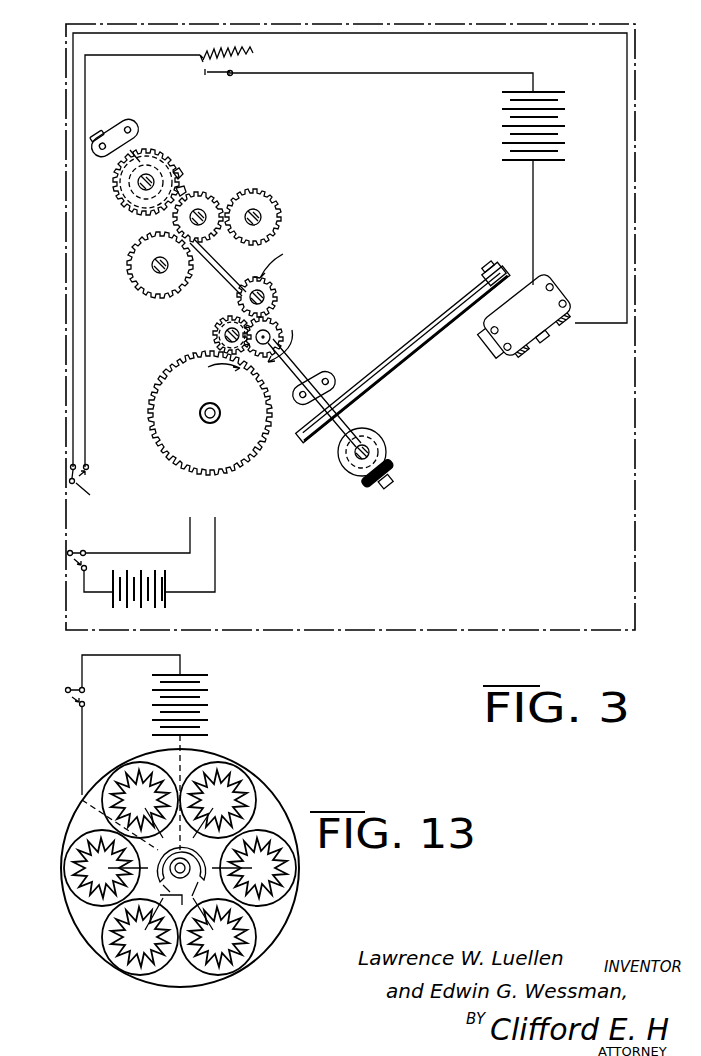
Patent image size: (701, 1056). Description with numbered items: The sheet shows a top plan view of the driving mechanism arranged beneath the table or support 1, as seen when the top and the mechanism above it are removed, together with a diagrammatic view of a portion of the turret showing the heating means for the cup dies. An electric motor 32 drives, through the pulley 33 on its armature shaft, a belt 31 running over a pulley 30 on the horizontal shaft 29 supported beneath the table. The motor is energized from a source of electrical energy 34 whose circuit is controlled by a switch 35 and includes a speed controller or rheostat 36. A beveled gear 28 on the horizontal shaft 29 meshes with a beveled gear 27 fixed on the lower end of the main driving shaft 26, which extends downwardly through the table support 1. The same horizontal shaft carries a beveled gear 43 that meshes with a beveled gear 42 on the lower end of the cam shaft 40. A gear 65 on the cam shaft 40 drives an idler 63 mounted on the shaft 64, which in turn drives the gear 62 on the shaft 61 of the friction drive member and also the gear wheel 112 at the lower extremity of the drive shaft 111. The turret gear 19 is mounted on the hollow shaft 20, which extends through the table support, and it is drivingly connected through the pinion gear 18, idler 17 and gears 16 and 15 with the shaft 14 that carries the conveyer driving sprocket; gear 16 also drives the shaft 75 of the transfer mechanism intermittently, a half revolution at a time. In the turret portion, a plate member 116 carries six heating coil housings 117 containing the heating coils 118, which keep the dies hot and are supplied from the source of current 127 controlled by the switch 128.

In FIG. 3, the table or support 1 is at (641, 372).
In FIG. 3, the shaft 14 is at (265, 298).
In FIG. 3, the gear 15 is at (277, 255).
In FIG. 3, the gear 16 is at (226, 338).
In FIG. 3, the idler 17 is at (280, 330).
In FIG. 3, the pinion gear 18 is at (213, 327).
In FIG. 3, the turret gear 19 is at (262, 440).
In FIG. 3, the shaft 20 is at (209, 421).
In FIG. 3, the main driving shaft 26 is at (371, 452).
In FIG. 3, the beveled gear 27 is at (382, 438).
In FIG. 3, the beveled gear 28 is at (395, 470).
In FIG. 3, the horizontal shaft 29 is at (386, 486).
In FIG. 3, the pulley 30 is at (345, 404).
In FIG. 3, the belt 31 is at (415, 345).
In FIG. 3, the electric motor 32 is at (535, 360).
In FIG. 3, the pulley 33 is at (497, 268).
In FIG. 3, the source of electrical energy 34 is at (505, 128).
In FIG. 3, the switch 35 is at (93, 491).
In FIG. 3, the speed controller or rheostat 36 is at (262, 57).
In FIG. 3, the cam shaft 40 is at (148, 180).
In FIG. 3, the beveled gear 42 is at (176, 171).
In FIG. 3, the beveled gear 43 is at (182, 190).
In FIG. 3, the shaft 61 is at (258, 217).
In FIG. 3, the gear 62 is at (270, 200).
In FIG. 3, the idler 63 is at (220, 198).
In FIG. 3, the shaft 64 is at (196, 218).
In FIG. 3, the gear 65 is at (120, 190).
In FIG. 3, the shaft 75 is at (207, 357).
In FIG. 3, the drive shaft 111 is at (157, 270).
In FIG. 3, the gear wheel 112 is at (140, 268).
In FIG. 13, the plate member 116 is at (80, 930).
In FIG. 13, the heating coil housings 117 is at (155, 975).
In FIG. 13, the heating coils 118 is at (276, 848).
In FIG. 3, the source of current 127 is at (170, 608).
In FIG. 13, the source of current 127 is at (210, 700).
In FIG. 3, the switch 128 is at (67, 552).
In FIG. 13, the switch 128 is at (66, 692).